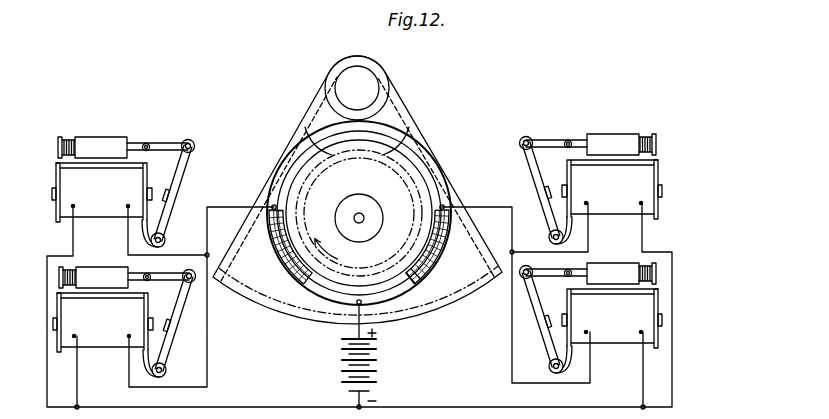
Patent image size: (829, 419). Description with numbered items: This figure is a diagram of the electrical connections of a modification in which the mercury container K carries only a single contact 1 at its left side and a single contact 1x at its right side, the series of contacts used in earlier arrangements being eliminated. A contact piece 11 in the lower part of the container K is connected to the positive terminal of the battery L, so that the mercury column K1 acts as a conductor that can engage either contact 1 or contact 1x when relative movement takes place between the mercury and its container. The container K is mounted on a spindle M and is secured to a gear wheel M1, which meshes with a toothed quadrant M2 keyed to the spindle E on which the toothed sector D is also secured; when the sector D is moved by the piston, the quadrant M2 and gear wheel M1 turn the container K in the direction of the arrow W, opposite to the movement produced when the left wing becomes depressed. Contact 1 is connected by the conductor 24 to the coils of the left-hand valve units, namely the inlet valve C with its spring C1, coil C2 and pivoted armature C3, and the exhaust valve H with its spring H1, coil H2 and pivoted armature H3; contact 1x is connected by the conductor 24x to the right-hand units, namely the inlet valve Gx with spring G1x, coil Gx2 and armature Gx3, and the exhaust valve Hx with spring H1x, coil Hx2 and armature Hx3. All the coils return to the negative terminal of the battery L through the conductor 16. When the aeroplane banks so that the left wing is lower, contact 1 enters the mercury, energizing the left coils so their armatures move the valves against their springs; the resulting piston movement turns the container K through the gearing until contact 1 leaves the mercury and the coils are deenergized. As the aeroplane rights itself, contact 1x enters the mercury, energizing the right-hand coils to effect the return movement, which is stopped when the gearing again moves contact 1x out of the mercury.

The conductor 16 is at (82, 238).
The conductor 24 is at (179, 256).
The conductor 24x is at (512, 240).
The spring H1 is at (68, 140).
The exhaust valve H is at (137, 143).
The pivoted armature H3 is at (185, 174).
The electric coil H2 is at (102, 192).
The spring C1 is at (72, 294).
The inlet valve C is at (146, 275).
The pivoted armature C3 is at (182, 301).
The electric coil C2 is at (103, 322).
The spring G1x is at (646, 137).
The inlet valve Gx is at (576, 144).
The pivoted armature Gx3 is at (530, 160).
The electric coil Gx2 is at (612, 189).
The spring H1x is at (646, 270).
The exhaust valve Hx is at (580, 270).
The pivoted armature Hx3 is at (530, 292).
The electric coil Hx2 is at (612, 318).
The spindle E is at (364, 78).
The toothed sector D is at (467, 228).
The toothed quadrant M2 is at (388, 108).
The gear wheel M1 is at (402, 175).
The spindle M is at (363, 218).
The arrow W is at (330, 252).
The contact 1 is at (275, 207).
The mercury container K is at (445, 240).
The mercury column K1 is at (432, 268).
The contact 1x is at (440, 209).
The contact piece 11 is at (357, 304).
The battery L is at (366, 368).